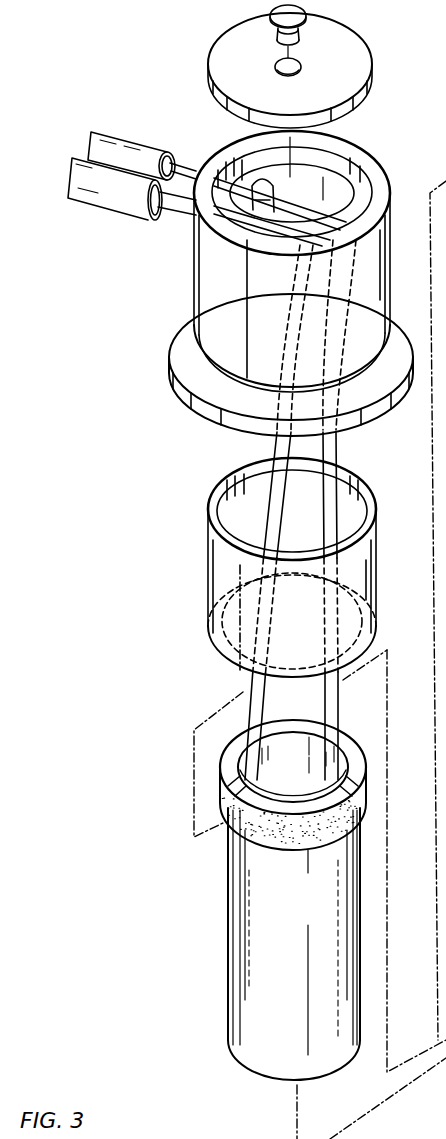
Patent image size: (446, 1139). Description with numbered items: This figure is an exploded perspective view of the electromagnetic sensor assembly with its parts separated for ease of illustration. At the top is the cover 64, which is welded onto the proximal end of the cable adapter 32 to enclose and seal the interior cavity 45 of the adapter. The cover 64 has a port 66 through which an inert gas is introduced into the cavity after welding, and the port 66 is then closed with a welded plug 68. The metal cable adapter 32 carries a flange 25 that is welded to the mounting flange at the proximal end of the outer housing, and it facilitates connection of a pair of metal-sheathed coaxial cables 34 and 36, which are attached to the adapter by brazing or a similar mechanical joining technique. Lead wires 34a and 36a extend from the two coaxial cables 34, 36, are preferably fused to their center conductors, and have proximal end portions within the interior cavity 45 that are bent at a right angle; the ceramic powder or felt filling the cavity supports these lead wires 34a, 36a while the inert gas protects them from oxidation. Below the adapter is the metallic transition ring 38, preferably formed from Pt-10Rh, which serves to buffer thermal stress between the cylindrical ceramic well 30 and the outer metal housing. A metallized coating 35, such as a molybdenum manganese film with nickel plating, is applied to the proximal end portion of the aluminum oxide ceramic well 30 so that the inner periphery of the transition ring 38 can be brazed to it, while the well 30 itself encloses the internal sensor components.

The flange 25 is at (180, 348).
The ceramic well 30 is at (240, 957).
The cable adapter 32 is at (204, 274).
The coaxial cable 34 is at (128, 150).
The lead wire 34a is at (340, 447).
The metallized coating 35 is at (274, 834).
The coaxial cable 36 is at (118, 192).
The lead wire 36a is at (276, 445).
The transition ring 38 is at (212, 490).
The interior cavity 45 is at (318, 190).
The cover 64 is at (372, 68).
The port 66 is at (298, 62).
The welded plug 68 is at (270, 21).